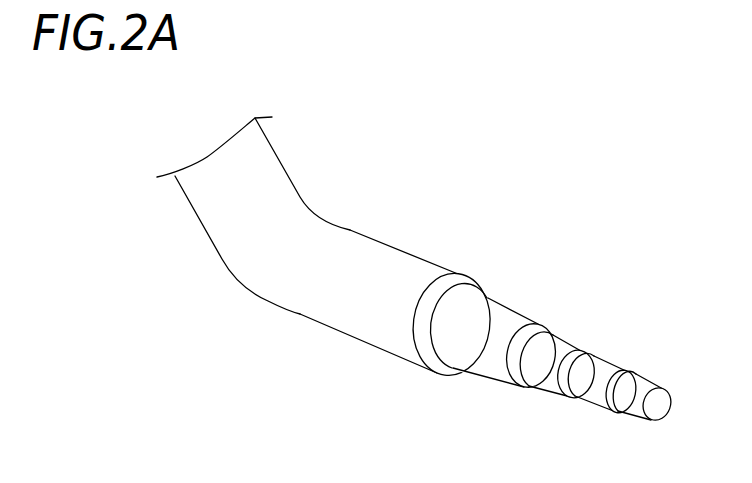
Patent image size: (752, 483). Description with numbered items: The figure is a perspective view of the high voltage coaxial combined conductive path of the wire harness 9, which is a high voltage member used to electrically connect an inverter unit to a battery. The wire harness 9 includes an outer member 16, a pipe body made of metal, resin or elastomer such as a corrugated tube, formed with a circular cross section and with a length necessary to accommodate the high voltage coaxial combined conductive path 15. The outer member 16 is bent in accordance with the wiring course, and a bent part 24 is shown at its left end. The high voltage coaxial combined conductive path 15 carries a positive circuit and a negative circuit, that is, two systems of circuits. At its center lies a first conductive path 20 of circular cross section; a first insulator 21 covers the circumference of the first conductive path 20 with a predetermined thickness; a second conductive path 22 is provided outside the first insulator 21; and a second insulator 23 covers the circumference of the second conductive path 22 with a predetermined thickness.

The wire harness 9 is at (326, 239).
The bent part 24 is at (245, 257).
The outer member 16 is at (383, 255).
The high voltage coaxial combined conductive path 15 is at (549, 382).
The second insulator 23 is at (482, 360).
The second conductive path 22 is at (547, 382).
The first insulator 21 is at (590, 395).
The first conductive path 20 is at (633, 405).